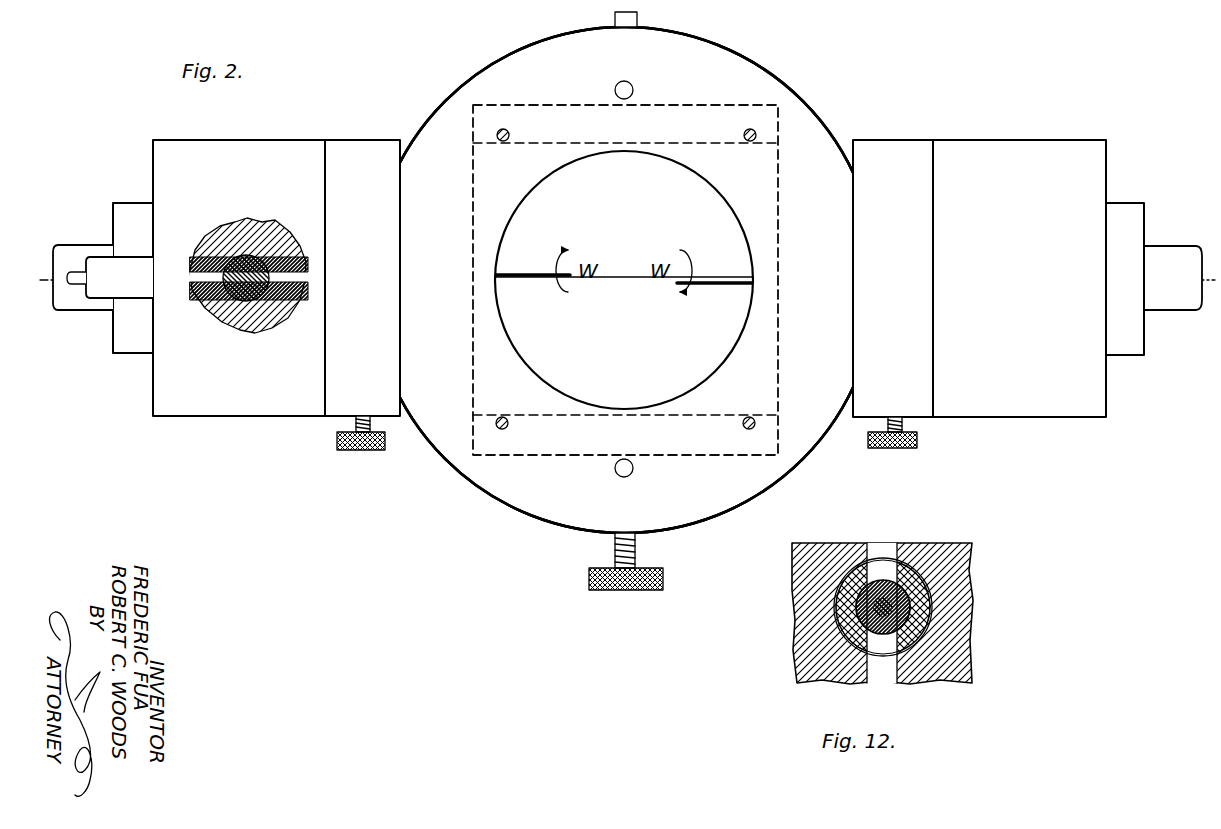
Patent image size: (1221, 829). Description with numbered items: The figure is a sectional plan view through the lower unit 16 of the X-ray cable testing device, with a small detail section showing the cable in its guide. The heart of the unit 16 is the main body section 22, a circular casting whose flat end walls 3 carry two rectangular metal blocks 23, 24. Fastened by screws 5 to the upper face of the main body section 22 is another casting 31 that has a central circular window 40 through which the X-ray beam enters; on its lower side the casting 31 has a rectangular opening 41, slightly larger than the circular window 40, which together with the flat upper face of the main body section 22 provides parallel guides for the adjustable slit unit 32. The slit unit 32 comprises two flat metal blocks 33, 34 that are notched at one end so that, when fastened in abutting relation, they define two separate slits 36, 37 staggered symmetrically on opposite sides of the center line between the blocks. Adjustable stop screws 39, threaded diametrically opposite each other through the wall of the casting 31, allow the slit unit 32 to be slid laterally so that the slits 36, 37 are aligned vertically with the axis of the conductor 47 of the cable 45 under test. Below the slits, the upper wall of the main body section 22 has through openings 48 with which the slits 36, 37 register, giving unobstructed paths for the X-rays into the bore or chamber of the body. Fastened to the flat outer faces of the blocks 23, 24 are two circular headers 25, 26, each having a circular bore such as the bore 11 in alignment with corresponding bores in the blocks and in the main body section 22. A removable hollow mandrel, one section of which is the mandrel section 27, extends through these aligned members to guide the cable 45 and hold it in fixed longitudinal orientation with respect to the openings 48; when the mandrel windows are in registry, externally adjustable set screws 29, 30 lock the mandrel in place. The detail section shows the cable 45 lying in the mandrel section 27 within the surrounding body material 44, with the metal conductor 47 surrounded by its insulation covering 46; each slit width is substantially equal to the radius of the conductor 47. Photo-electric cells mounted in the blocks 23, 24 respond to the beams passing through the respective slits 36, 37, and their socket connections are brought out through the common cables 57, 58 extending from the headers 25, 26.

In FIG. 2, the flat end walls 3 is at (400, 170).
In FIG. 2, the screws 5 is at (502, 129).
In FIG. 2, the circular bore 11 is at (215, 318).
In FIG. 2, the unit 16 is at (791, 82).
In FIG. 2, the main body section 22 is at (768, 493).
In FIG. 2, the rectangular metal block 23 is at (355, 152).
In FIG. 2, the rectangular metal block 24 is at (903, 152).
In FIG. 2, the circular header 25 is at (200, 402).
In FIG. 2, the circular header 26 is at (1018, 402).
In FIG. 12, the mandrel section 27 is at (915, 582).
In FIG. 2, the set screw 29 is at (348, 450).
In FIG. 2, the set screw 30 is at (892, 448).
In FIG. 2, the casting 31 is at (740, 52).
In FIG. 2, the adjustable slit unit 32 is at (760, 321).
In FIG. 2, the flat metal block 33 is at (624, 237).
In FIG. 2, the flat metal block 34 is at (640, 17).
In FIG. 2, the slit 36 is at (530, 277).
In FIG. 2, the slit 37 is at (695, 284).
In FIG. 2, the adjustable stop screw 39 is at (664, 578).
In FIG. 2, the central circular window 40 is at (696, 181).
In FIG. 2, the rectangular opening 41 is at (780, 345).
In FIG. 12, the block 44 is at (840, 606).
In FIG. 2, the cable 45 is at (133, 290).
In FIG. 2, the insulation covering 46 is at (243, 258).
In FIG. 12, the insulation covering 46 is at (925, 598).
In FIG. 2, the metal conductor 47 is at (75, 278).
In FIG. 12, the metal conductor 47 is at (905, 614).
In FIG. 12, the through openings 48 is at (884, 550).
In FIG. 2, the cable 57 is at (83, 248).
In FIG. 2, the cable 58 is at (1170, 250).